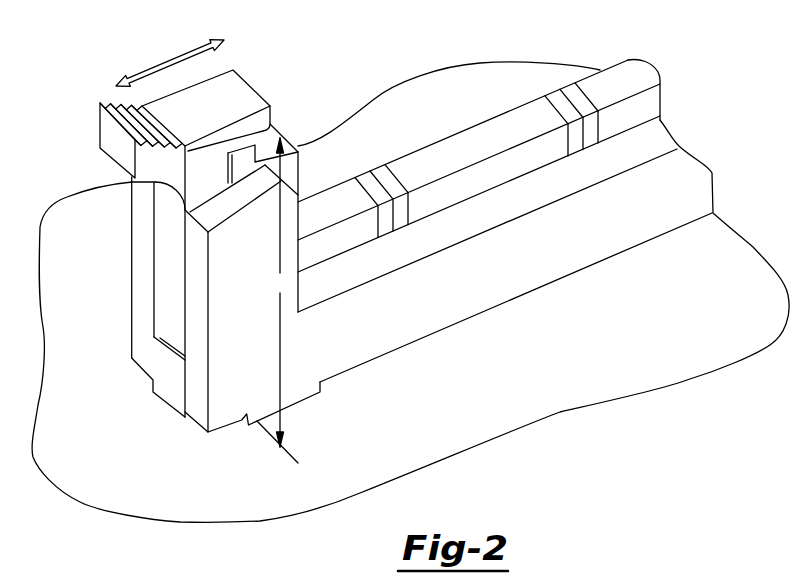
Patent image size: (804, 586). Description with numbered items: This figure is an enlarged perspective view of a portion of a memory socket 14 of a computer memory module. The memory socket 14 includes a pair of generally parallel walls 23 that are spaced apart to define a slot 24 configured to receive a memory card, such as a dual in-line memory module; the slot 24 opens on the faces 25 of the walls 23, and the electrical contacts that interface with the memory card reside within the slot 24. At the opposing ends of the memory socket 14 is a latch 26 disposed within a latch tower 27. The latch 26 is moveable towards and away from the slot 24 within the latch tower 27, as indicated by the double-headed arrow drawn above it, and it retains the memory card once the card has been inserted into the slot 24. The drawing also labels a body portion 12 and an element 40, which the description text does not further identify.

The tool holder body 12 is at (603, 382).
The memory socket 14 is at (218, 397).
The walls 23 is at (658, 73).
The slot 24 is at (487, 193).
The faces 25 is at (408, 172).
The latch 26 is at (230, 103).
The latch tower 27 is at (147, 240).
The rounded edge 40 is at (273, 121).